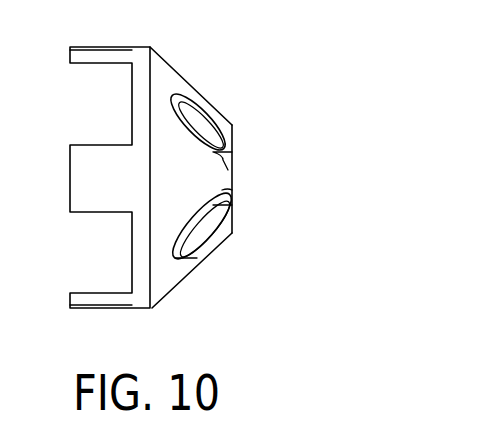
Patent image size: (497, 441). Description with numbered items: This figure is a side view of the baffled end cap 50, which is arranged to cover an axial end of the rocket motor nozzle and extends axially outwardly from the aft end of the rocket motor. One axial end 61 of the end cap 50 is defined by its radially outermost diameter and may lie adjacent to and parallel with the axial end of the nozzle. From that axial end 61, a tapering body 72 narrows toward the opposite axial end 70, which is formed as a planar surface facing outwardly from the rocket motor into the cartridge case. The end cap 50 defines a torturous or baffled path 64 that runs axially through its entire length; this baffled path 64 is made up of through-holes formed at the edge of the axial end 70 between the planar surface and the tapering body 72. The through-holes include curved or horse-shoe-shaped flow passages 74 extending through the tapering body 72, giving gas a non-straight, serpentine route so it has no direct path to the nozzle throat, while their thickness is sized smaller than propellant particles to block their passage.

The end cap 50 is at (208, 178).
The axial end 61 is at (132, 257).
The baffled path 64 is at (190, 89).
The axial end 70 is at (218, 223).
The tapering body 72 is at (167, 80).
The flow passages 74 is at (210, 255).